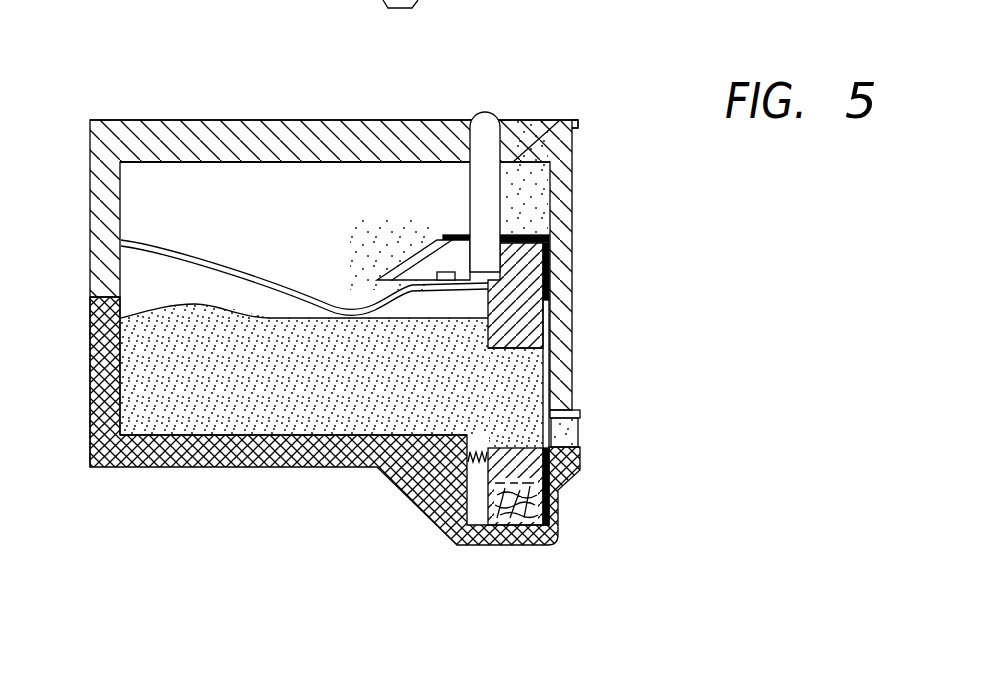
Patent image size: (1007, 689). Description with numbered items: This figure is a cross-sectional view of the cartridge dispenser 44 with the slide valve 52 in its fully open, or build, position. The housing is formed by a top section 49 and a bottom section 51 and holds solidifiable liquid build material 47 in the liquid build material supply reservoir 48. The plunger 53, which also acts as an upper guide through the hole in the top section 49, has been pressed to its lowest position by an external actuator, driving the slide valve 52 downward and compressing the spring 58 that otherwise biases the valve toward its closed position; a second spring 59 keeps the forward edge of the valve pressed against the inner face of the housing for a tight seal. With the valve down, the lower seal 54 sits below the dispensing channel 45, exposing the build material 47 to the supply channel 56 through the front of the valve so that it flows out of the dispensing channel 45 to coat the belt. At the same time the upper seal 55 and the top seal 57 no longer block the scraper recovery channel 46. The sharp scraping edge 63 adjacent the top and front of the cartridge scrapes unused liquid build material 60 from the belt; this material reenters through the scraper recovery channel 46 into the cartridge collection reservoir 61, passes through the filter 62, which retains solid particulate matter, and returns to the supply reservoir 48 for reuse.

The cartridge dispenser 44 is at (232, 88).
The dispensing channel 45 is at (578, 430).
The scraper recovery channel 46 is at (530, 130).
The solidifiable liquid build material 47 is at (277, 428).
The liquid build material supply reservoir 48 is at (130, 283).
The top section 49 is at (98, 186).
The bottom section 51 is at (95, 380).
The slide valve 52 is at (520, 333).
The plunger 53 is at (488, 125).
The lower seal 54 is at (555, 458).
The upper seal 55 is at (545, 278).
The supply channel 56 is at (530, 385).
The top seal 57 is at (525, 237).
The spring 58 is at (532, 520).
The spring 59 is at (467, 463).
The unused liquid build material 60 is at (558, 120).
The cartridge collection reservoir 61 is at (318, 170).
The filter 62 is at (152, 242).
The sharp scraping edge 63 is at (578, 122).